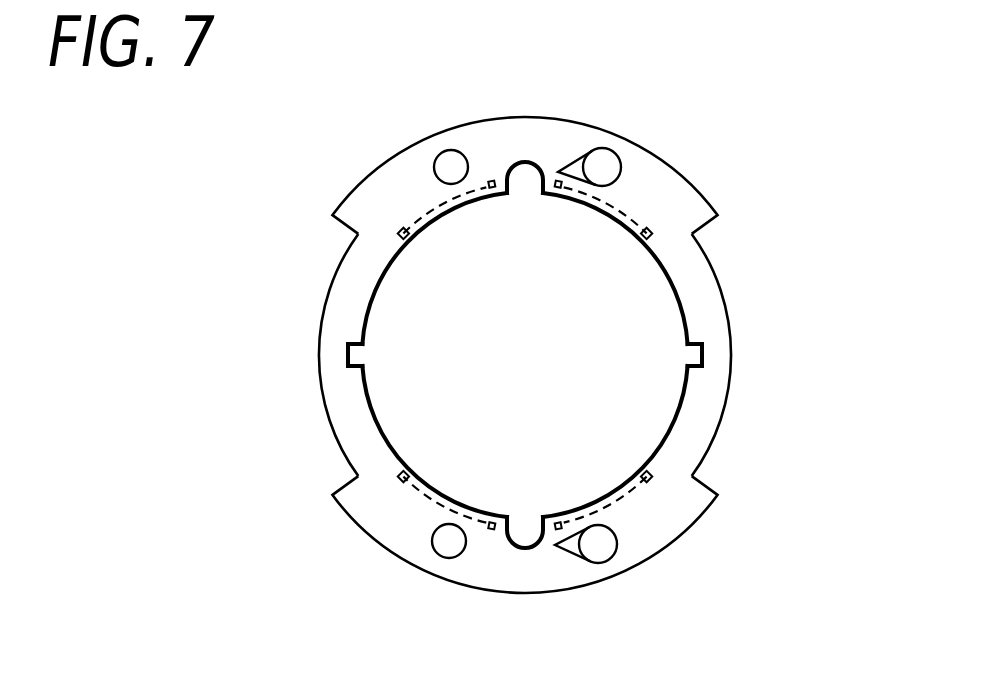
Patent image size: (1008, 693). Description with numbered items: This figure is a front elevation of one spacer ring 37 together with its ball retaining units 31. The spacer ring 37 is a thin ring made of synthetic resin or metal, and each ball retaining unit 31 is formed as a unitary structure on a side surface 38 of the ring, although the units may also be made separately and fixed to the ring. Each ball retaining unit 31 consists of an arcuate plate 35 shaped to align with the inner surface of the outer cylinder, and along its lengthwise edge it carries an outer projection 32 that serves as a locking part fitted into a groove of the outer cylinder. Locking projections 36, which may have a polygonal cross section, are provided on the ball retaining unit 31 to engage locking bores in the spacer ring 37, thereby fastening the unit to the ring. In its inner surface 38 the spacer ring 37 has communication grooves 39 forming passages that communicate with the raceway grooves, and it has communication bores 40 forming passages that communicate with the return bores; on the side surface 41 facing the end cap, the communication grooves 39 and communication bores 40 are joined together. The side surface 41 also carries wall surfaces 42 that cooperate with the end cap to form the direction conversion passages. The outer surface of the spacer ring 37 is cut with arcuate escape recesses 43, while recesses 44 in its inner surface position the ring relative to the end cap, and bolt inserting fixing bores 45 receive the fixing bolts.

The ball retaining unit 31 is at (423, 233).
The outer projection 32 is at (507, 178).
The arcuate plate 35 is at (472, 200).
The locking projection 36 is at (490, 176).
The spacer ring 37 is at (388, 148).
The inner surface 38 is at (680, 287).
The communication groove 39 is at (510, 524).
The communication bore 40 is at (618, 163).
The side surface 41 is at (692, 218).
The wall surface 42 is at (572, 176).
The escape recess 43 is at (330, 287).
The recess 44 is at (364, 352).
The bolt inserting fixing bore 45 is at (450, 152).